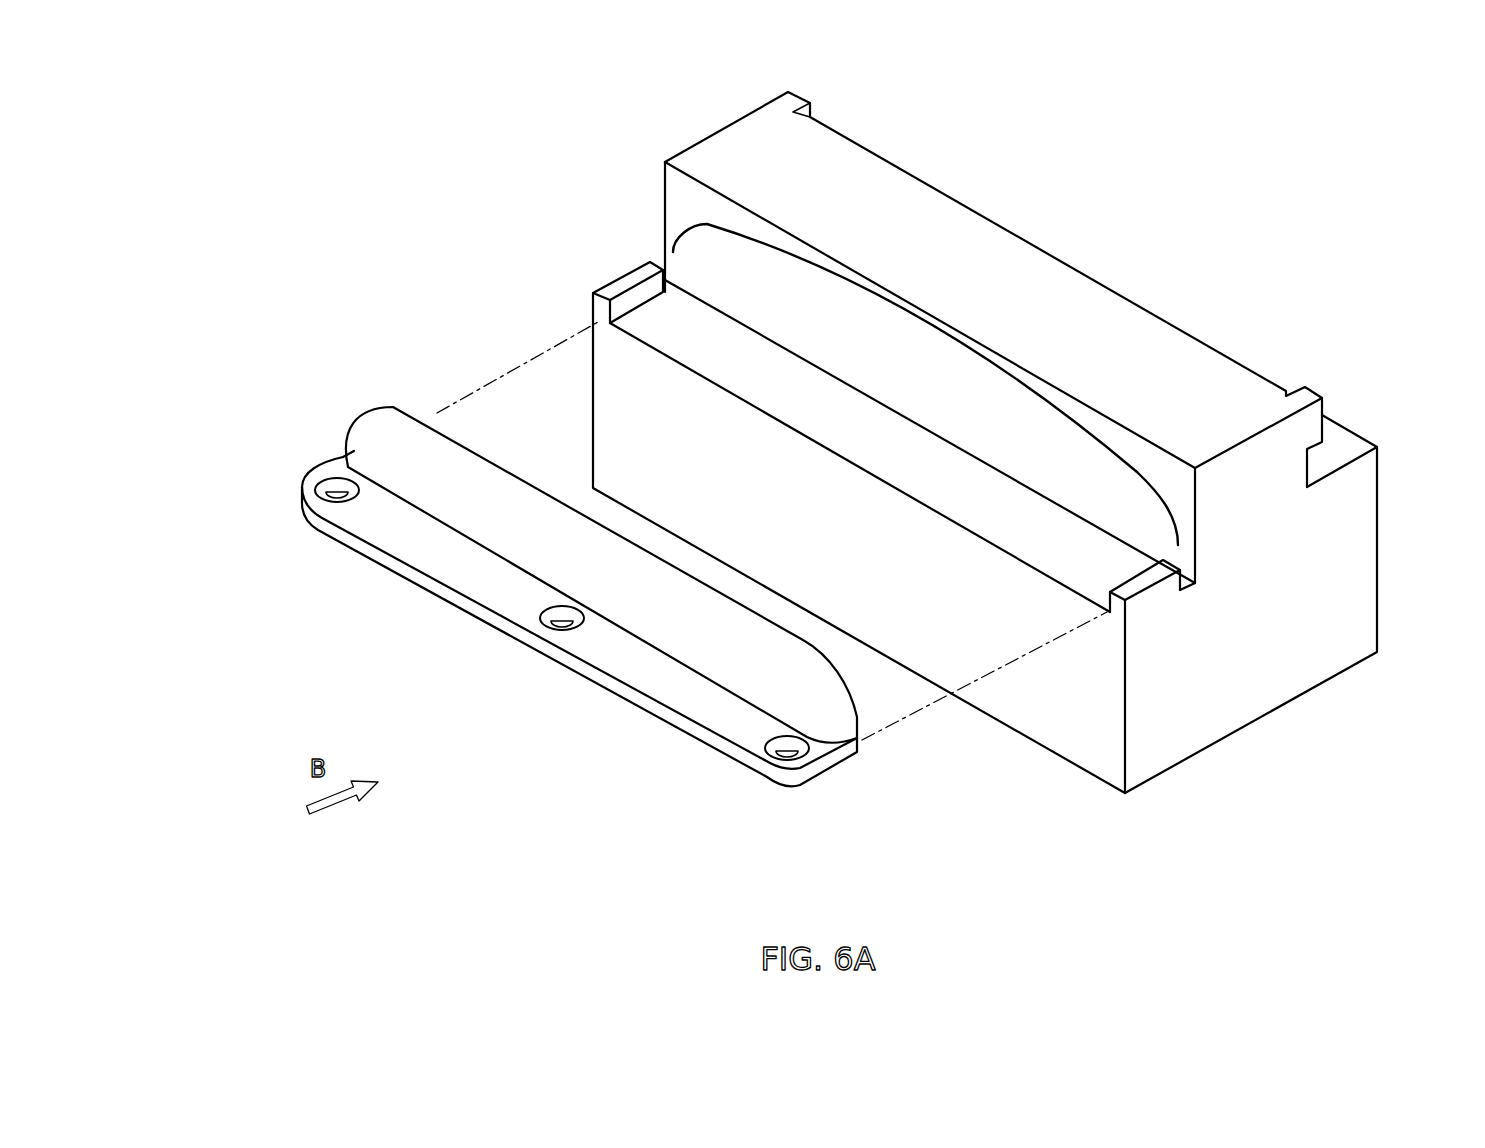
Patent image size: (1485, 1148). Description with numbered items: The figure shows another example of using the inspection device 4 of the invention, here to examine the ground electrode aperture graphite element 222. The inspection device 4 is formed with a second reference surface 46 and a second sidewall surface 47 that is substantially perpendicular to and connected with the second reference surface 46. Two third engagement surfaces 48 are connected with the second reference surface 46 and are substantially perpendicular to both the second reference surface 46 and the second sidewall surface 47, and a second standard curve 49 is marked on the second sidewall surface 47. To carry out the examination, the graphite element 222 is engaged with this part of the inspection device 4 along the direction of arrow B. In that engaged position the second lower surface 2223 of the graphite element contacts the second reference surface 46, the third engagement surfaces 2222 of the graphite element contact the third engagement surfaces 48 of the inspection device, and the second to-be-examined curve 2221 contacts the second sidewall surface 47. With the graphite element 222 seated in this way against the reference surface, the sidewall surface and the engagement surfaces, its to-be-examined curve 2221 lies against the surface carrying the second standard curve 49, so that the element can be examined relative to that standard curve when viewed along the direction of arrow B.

The inspection device 4 is at (1243, 727).
The second reference surface 46 is at (970, 517).
The second sidewall surface 47 is at (682, 196).
The third engagement surfaces 48 is at (630, 300).
The second standard curve 49 is at (763, 243).
The ground electrode aperture graphite element 222 is at (555, 588).
The second to-be-examined curve 2221 is at (573, 487).
The third engagement surfaces 2222 is at (321, 468).
The second lower surface 2223 is at (598, 682).